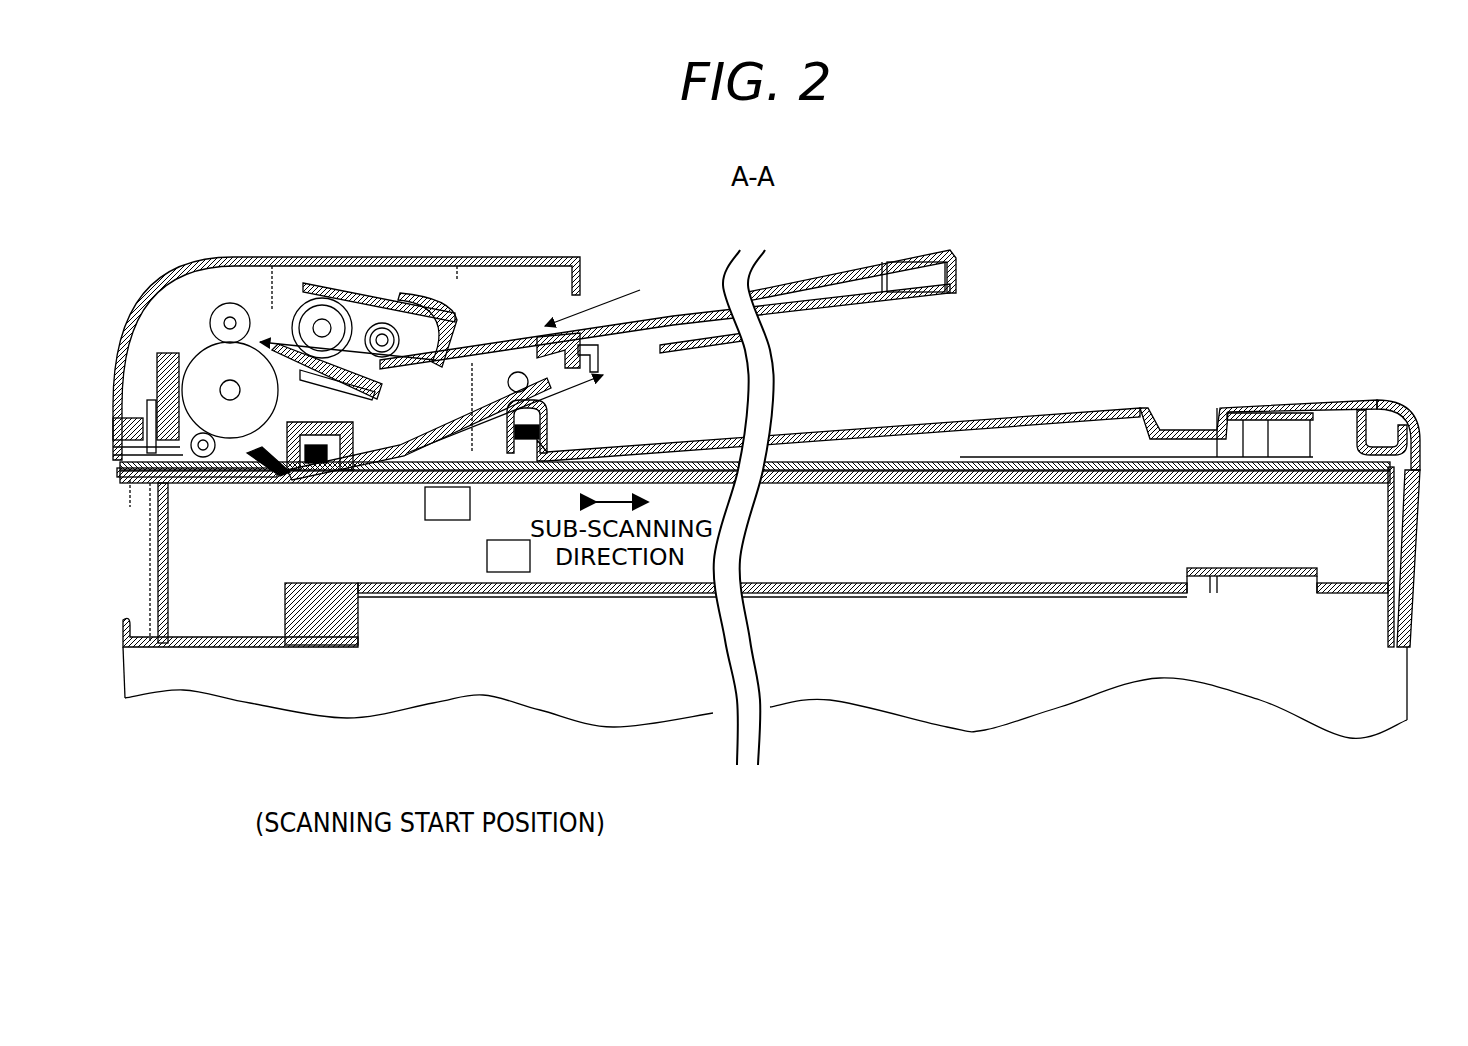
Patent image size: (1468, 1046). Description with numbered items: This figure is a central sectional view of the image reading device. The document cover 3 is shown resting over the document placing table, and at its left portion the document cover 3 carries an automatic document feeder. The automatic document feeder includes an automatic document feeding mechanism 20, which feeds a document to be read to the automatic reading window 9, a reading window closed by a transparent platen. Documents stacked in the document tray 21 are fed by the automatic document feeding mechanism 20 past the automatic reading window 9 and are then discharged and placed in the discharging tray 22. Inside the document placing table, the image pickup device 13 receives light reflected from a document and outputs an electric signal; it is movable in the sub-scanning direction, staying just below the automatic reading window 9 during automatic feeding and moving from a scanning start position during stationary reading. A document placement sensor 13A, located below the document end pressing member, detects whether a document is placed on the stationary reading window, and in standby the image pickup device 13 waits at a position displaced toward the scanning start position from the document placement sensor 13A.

The automatic document feeding mechanism 20 is at (341, 254).
The document tray 21 is at (663, 318).
The discharging tray 22 is at (947, 416).
The document cover 3 is at (1424, 434).
The image reading window 9 is at (233, 480).
The image pickup device 13 is at (470, 503).
The document placement sensor 13A is at (530, 555).